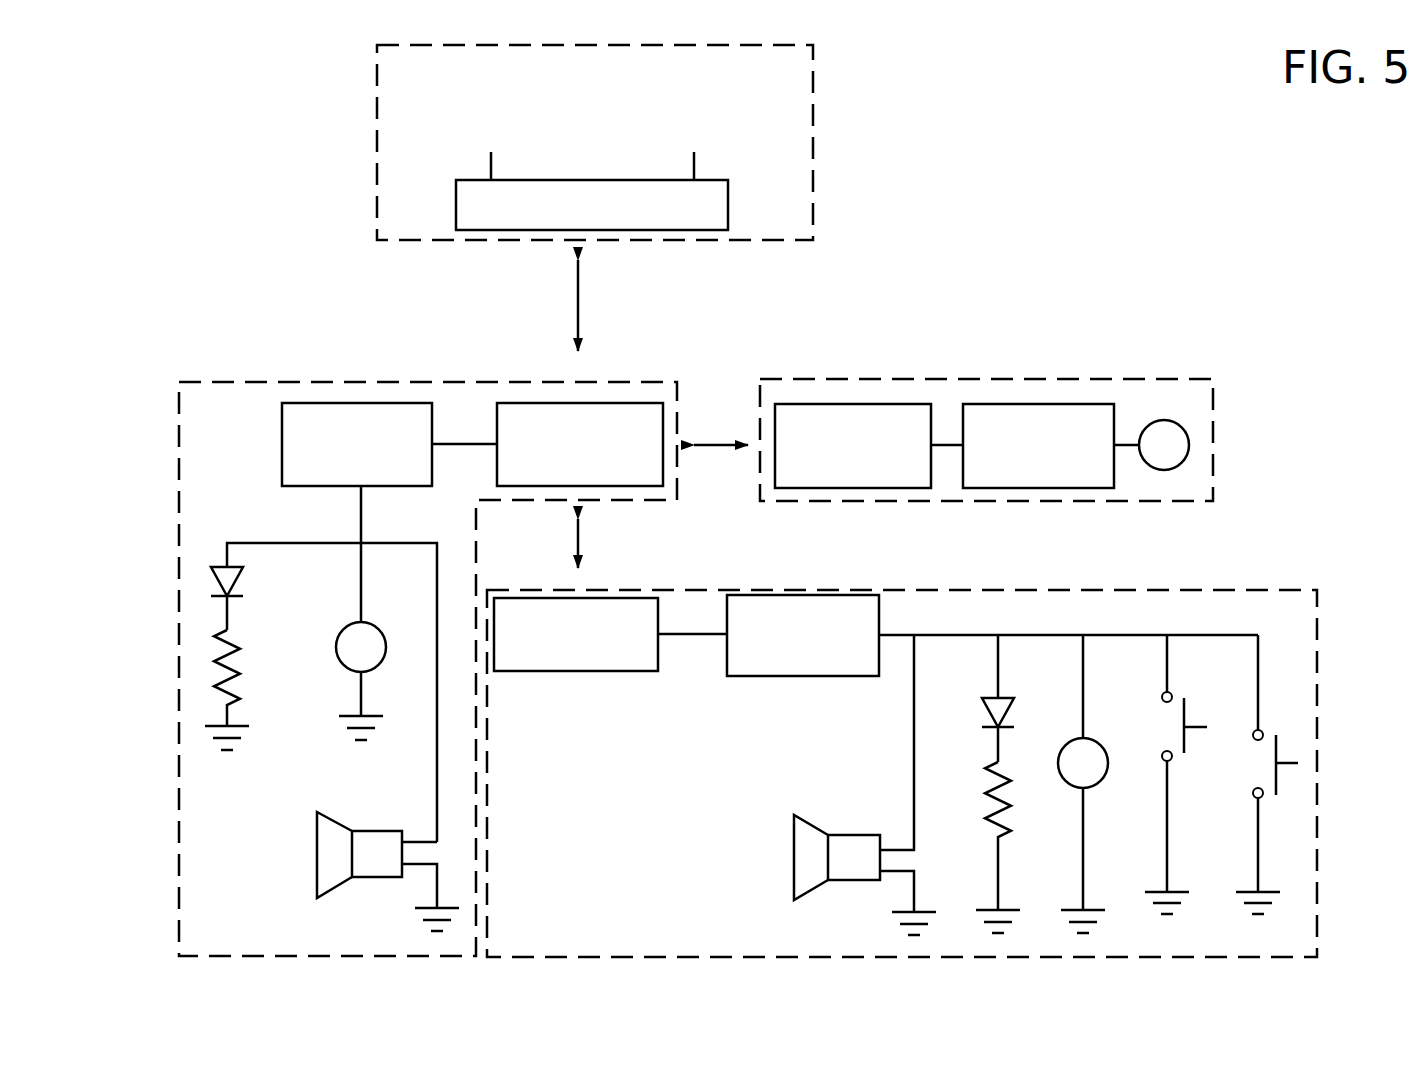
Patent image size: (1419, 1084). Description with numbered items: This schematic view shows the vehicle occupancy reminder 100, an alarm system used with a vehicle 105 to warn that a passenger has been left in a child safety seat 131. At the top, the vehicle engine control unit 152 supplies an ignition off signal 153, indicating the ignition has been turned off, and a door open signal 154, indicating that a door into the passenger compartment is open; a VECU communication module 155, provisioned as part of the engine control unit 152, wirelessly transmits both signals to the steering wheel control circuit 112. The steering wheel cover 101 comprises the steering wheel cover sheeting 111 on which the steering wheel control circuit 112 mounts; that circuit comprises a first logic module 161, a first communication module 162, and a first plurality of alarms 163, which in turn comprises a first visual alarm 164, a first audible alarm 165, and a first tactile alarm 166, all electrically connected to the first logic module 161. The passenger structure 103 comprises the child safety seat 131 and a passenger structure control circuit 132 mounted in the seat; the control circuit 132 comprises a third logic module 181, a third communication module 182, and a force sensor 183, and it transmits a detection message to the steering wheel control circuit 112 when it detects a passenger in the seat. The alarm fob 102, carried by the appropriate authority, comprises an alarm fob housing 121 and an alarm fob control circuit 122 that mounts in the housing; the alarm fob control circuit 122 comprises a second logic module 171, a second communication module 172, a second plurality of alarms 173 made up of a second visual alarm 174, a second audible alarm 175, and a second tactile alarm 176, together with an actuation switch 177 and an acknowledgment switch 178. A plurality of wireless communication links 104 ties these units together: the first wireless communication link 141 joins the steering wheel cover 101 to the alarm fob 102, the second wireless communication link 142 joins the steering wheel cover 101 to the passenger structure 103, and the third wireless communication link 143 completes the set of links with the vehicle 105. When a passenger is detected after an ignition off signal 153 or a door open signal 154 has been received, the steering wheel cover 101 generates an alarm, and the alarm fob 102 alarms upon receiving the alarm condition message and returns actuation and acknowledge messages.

The vehicle occupancy reminder 100 is at (1112, 195).
The steering wheel cover 101 is at (208, 330).
The alarm fob 102 is at (1337, 658).
The passenger structure 103 is at (1170, 350).
The plurality of wireless communication links 104 is at (882, 245).
The vehicle 105 is at (813, 155).
The steering wheel cover sheeting 111 is at (179, 502).
The steering wheel control circuit 112 is at (263, 475).
The alarm fob housing 121 is at (1318, 805).
The alarm fob control circuit 122 is at (1288, 902).
The child safety seat 131 is at (1091, 378).
The passenger structure control circuit 132 is at (955, 395).
The first wireless communication link 141 is at (582, 538).
The second wireless communication link 142 is at (718, 450).
The third wireless communication link 143 is at (576, 291).
The vehicle engine control unit 152 is at (787, 66).
The VECU ignition off signal 153 is at (547, 123).
The VECU door open signal 154 is at (700, 123).
The VECU communication module 155 is at (729, 203).
The first logic module 161 is at (415, 422).
The first communication module 162 is at (640, 418).
The first plurality of alarms 163 is at (216, 882).
The first visual alarm 164 is at (245, 663).
The first audible alarm 165 is at (319, 860).
The first tactile alarm 166 is at (334, 654).
The second logic module 171 is at (755, 677).
The second communication module 172 is at (574, 671).
The second plurality of alarms 173 is at (614, 818).
The second visual alarm 174 is at (975, 707).
The second audible alarm 175 is at (794, 855).
The second tactile alarm 176 is at (1103, 782).
The actuation switch 177 is at (1193, 750).
The acknowledgment switch 178 is at (1287, 747).
The third logic module 181 is at (1047, 481).
The third communication module 182 is at (898, 481).
The force sensor 183 is at (1188, 438).